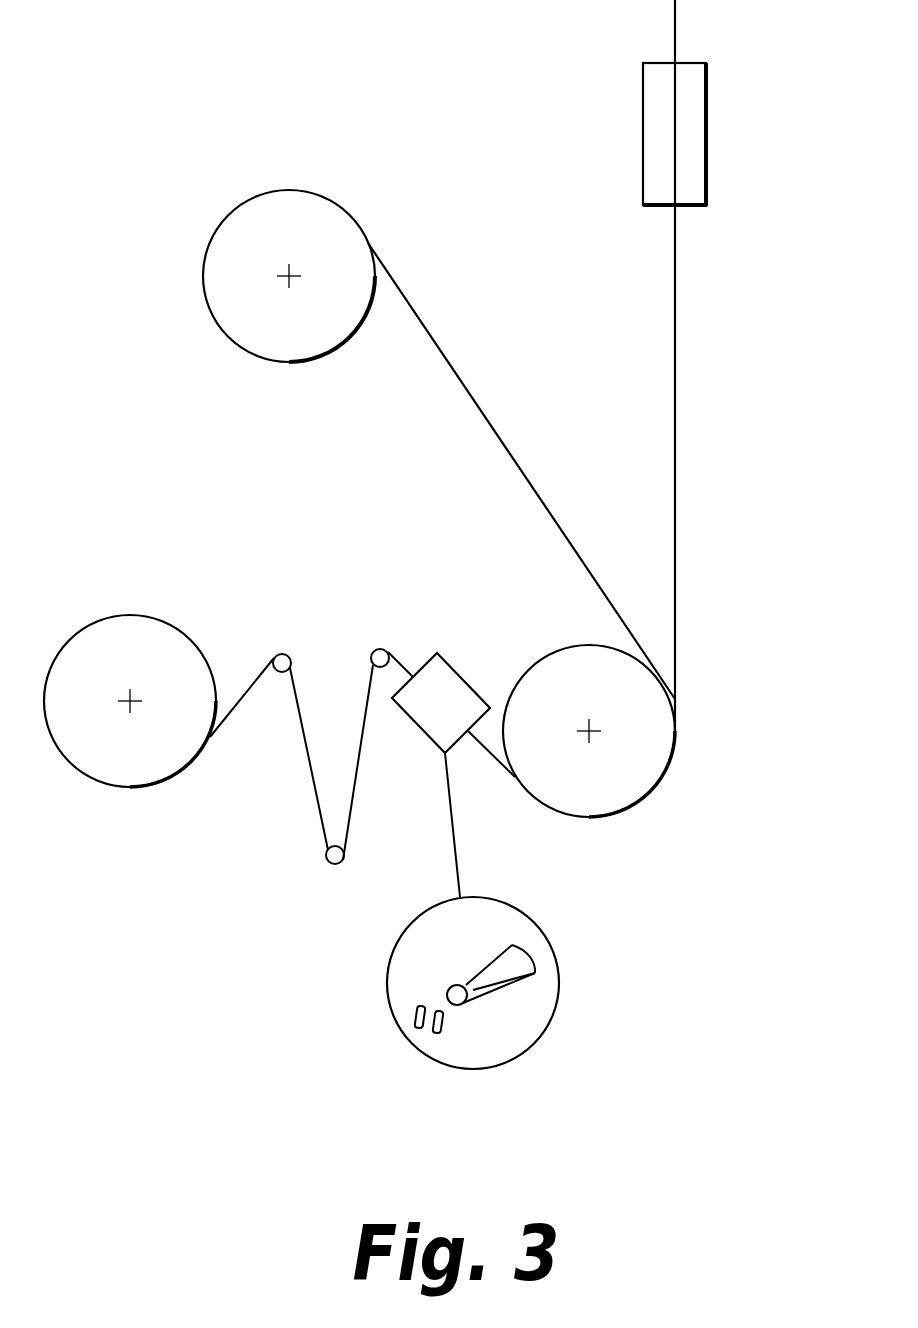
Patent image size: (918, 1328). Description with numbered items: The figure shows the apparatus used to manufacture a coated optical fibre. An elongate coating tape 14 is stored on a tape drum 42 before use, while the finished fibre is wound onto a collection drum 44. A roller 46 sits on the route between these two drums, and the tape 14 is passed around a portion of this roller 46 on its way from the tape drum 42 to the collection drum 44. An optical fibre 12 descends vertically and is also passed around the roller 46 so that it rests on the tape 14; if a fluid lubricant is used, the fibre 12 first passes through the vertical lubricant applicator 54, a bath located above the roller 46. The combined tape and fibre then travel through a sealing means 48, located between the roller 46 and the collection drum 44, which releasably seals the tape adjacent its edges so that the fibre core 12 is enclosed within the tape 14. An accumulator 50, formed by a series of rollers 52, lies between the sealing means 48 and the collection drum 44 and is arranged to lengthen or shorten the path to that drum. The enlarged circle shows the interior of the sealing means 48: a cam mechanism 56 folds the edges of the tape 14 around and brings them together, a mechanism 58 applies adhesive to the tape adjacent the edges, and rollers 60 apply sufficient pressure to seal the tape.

The optical fibre 12 is at (678, 360).
The elongate tape 14 is at (477, 403).
The tape drum 42 is at (335, 238).
The collection drum 44 is at (145, 763).
The roller 46 is at (645, 728).
The sealing means 48 is at (452, 692).
The accumulator 50 is at (262, 834).
The rollers 52 is at (373, 655).
The lubricant applicator 54 is at (698, 152).
The cam mechanism 56 is at (517, 988).
The adhesive mechanism 58 is at (465, 978).
The rollers 60 is at (443, 1025).